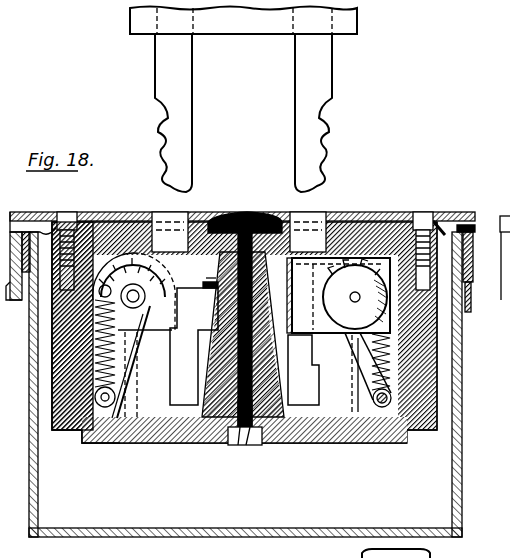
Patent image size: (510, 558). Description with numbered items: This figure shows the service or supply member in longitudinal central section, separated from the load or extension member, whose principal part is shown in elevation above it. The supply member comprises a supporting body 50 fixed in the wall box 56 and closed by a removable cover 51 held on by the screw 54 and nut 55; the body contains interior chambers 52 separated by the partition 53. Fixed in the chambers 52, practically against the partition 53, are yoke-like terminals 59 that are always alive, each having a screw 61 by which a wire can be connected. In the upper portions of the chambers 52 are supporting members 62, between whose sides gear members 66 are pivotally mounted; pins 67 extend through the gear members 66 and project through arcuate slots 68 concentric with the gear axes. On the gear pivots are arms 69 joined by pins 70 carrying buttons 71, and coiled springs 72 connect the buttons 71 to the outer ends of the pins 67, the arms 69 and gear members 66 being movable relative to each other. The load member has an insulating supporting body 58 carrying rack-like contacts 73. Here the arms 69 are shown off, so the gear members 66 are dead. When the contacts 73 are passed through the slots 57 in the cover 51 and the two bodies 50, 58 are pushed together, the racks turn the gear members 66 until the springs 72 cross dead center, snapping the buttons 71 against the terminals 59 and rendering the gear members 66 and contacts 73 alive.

The supporting body 50 is at (310, 443).
The removable cover 51 is at (366, 212).
The interior chambers 52 is at (160, 410).
The partition 53 is at (258, 442).
The screw 54 is at (248, 430).
The nut 55 is at (236, 445).
The wall box 56 is at (462, 393).
The slots 57 is at (170, 232).
The supporting body 58 is at (357, 22).
The yoke-like terminals 59 is at (214, 300).
The screw 61 is at (205, 277).
The supporting members 62 is at (150, 300).
The gear members 66 is at (190, 240).
The pins 67 is at (55, 325).
The arcuate slots 68 is at (146, 302).
The arms 69 is at (137, 378).
The pins 70 is at (105, 410).
The buttons 71 is at (84, 440).
The coiled springs 72 is at (52, 376).
The contacts 73 is at (192, 113).